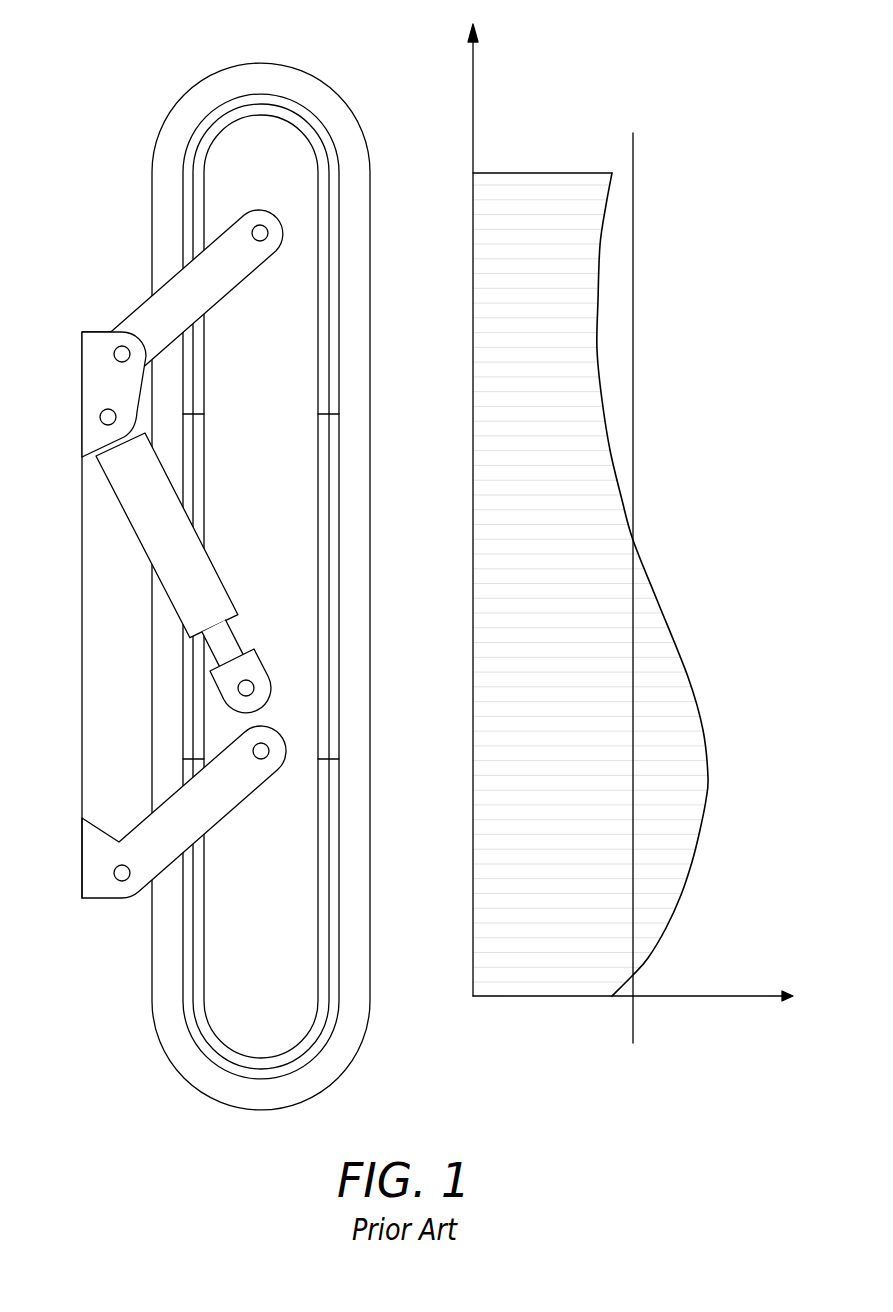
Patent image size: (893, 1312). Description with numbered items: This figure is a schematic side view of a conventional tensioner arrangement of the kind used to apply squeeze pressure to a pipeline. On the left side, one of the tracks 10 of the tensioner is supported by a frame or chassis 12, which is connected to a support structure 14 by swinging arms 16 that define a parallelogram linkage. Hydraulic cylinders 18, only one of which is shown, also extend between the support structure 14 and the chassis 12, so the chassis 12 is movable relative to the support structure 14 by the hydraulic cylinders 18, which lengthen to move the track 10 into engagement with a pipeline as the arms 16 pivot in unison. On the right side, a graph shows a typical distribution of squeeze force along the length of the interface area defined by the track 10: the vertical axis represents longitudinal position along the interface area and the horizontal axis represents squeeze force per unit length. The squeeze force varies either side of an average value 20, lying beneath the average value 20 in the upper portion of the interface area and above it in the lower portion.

The track 10 is at (260, 72).
The chassis 12 is at (260, 1027).
The support structure 14 is at (90, 710).
The swinging arms 16 is at (148, 314).
The hydraulic cylinders 18 is at (147, 529).
The average value 20 is at (633, 272).